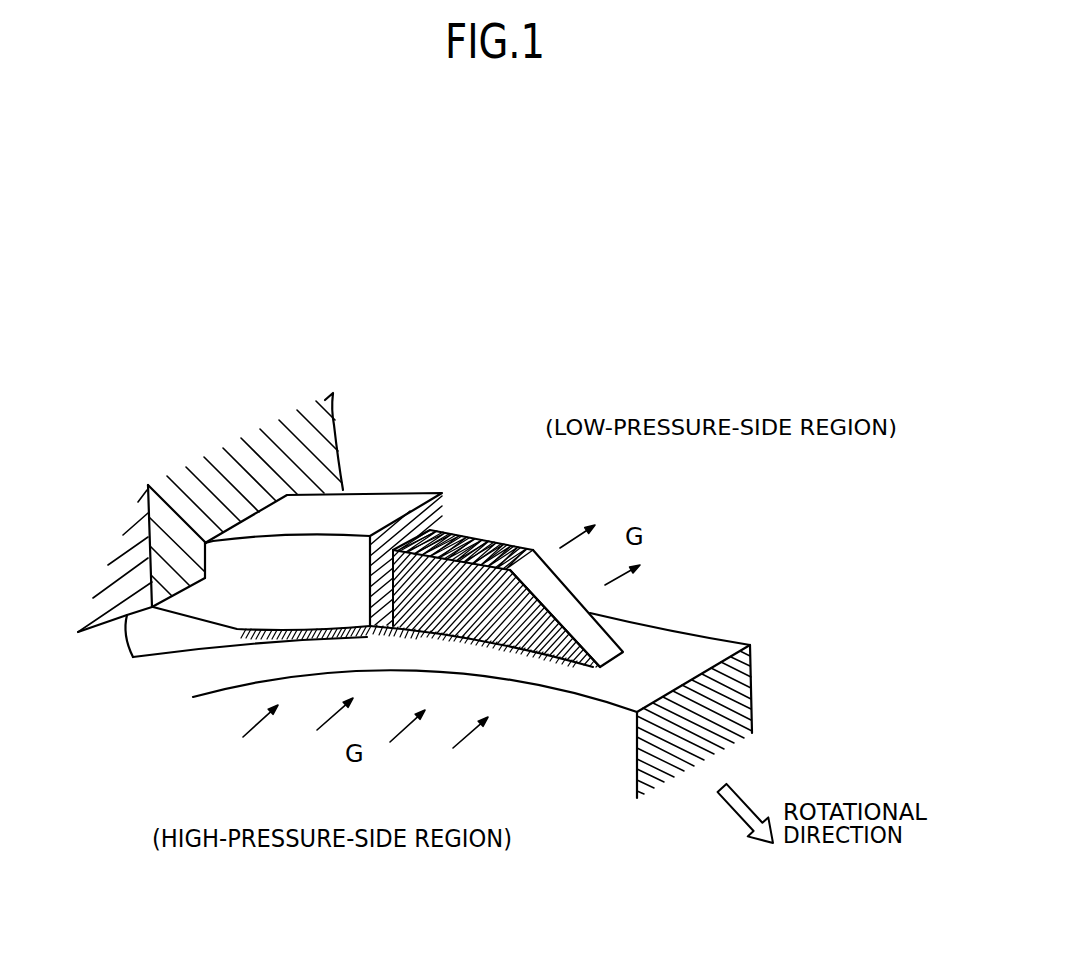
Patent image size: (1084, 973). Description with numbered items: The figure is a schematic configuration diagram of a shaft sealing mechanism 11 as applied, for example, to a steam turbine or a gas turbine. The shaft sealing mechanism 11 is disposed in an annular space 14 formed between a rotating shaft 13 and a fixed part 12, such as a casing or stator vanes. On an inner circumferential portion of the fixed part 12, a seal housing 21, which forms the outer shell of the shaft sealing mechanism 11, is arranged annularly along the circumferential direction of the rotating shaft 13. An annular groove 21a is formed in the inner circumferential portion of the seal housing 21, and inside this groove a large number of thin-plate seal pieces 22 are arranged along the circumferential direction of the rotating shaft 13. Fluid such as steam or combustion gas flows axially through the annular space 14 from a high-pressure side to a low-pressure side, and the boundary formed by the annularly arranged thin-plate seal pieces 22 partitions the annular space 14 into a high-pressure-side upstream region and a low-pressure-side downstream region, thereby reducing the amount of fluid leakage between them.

The shaft sealing mechanism 11 is at (374, 540).
The fixed part 12 is at (333, 422).
The rotating shaft 13 is at (717, 632).
The annular space 14 is at (725, 537).
The seal housing 21 is at (388, 490).
The annular groove 21a is at (458, 528).
The thin-plate seal pieces 22 is at (603, 653).